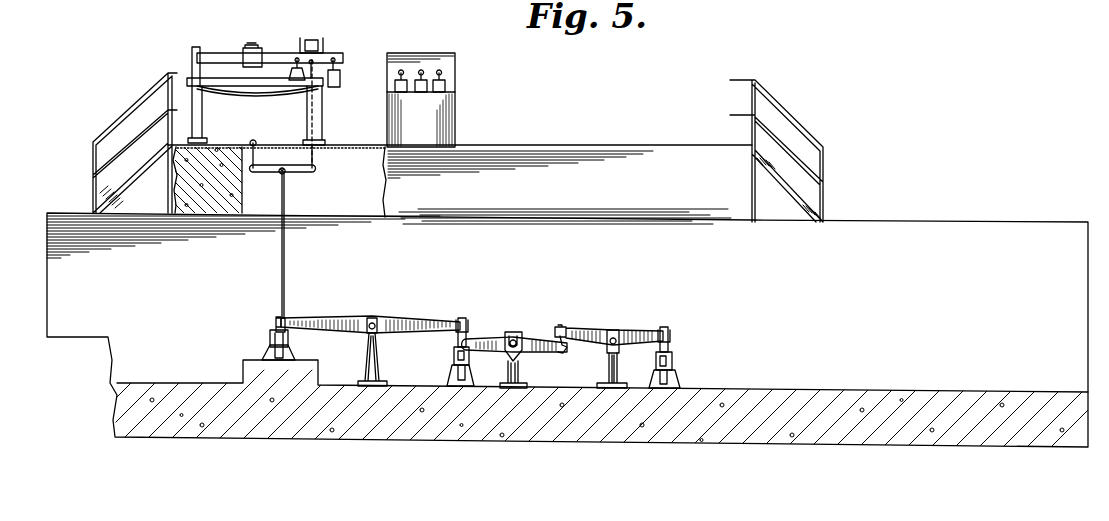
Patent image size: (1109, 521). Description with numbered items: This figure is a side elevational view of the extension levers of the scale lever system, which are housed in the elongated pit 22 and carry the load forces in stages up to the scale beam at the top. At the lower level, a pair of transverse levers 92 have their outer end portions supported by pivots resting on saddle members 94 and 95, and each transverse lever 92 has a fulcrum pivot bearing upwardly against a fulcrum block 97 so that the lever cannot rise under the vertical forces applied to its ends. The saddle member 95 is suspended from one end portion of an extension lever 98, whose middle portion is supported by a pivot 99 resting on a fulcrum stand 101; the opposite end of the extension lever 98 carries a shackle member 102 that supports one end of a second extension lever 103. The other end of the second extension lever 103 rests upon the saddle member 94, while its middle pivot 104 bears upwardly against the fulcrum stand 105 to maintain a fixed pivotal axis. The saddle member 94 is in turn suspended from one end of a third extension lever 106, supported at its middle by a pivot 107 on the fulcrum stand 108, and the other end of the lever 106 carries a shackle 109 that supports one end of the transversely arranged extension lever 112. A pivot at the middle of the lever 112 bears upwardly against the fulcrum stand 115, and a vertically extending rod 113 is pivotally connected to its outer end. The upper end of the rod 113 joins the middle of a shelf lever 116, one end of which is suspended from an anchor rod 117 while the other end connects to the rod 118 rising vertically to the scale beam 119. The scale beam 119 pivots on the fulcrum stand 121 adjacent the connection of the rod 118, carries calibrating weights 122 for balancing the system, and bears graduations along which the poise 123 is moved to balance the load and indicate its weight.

The pit 22 is at (847, 378).
The transverse lever 92 is at (455, 357).
The saddle member 94 is at (463, 318).
The saddle member 95 is at (670, 340).
The fulcrum block 97 is at (450, 375).
The extension lever 98 is at (593, 330).
The pivot 99 is at (619, 332).
The fulcrum stand 101 is at (605, 375).
The shackle member 102 is at (565, 343).
The second extension lever 103 is at (535, 341).
The pivot 104 is at (515, 333).
The fulcrum stand 105 is at (518, 375).
The third extension lever 106 is at (402, 320).
The pivot 107 is at (373, 317).
The fulcrum stand 108 is at (367, 363).
The shackle 109 is at (287, 317).
The extension lever 112 is at (272, 338).
The rod 113 is at (285, 253).
The fulcrum stand 115 is at (293, 347).
The shelf lever 116 is at (297, 172).
The anchor rod 117 is at (266, 148).
The rod 118 is at (317, 157).
The scale beam 119 is at (280, 53).
The fulcrum stand 121 is at (295, 70).
The calibrating weights 122 is at (340, 72).
The poise 123 is at (253, 58).